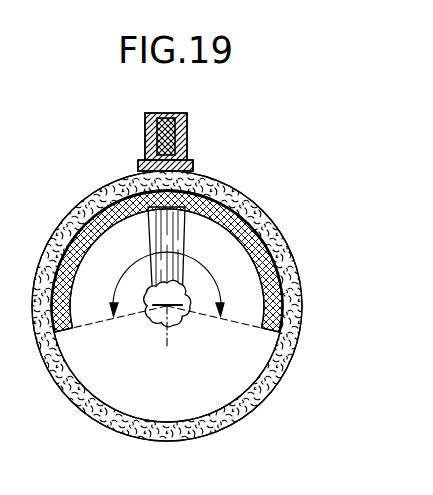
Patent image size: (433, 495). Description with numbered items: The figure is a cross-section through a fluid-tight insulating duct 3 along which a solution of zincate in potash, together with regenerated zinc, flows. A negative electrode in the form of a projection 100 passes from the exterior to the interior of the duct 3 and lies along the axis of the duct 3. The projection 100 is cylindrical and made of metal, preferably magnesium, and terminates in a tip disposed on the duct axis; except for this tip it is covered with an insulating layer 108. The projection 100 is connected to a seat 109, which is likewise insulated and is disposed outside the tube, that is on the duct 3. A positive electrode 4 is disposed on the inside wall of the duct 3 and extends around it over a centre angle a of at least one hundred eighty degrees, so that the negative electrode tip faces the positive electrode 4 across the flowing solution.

The fluid-tight insulating duct 3 is at (255, 198).
The positive electrode 4 is at (72, 307).
The projections 100 is at (178, 275).
The insulating layer 108 is at (145, 133).
The seat 109 is at (187, 133).
The centre angle a is at (127, 270).